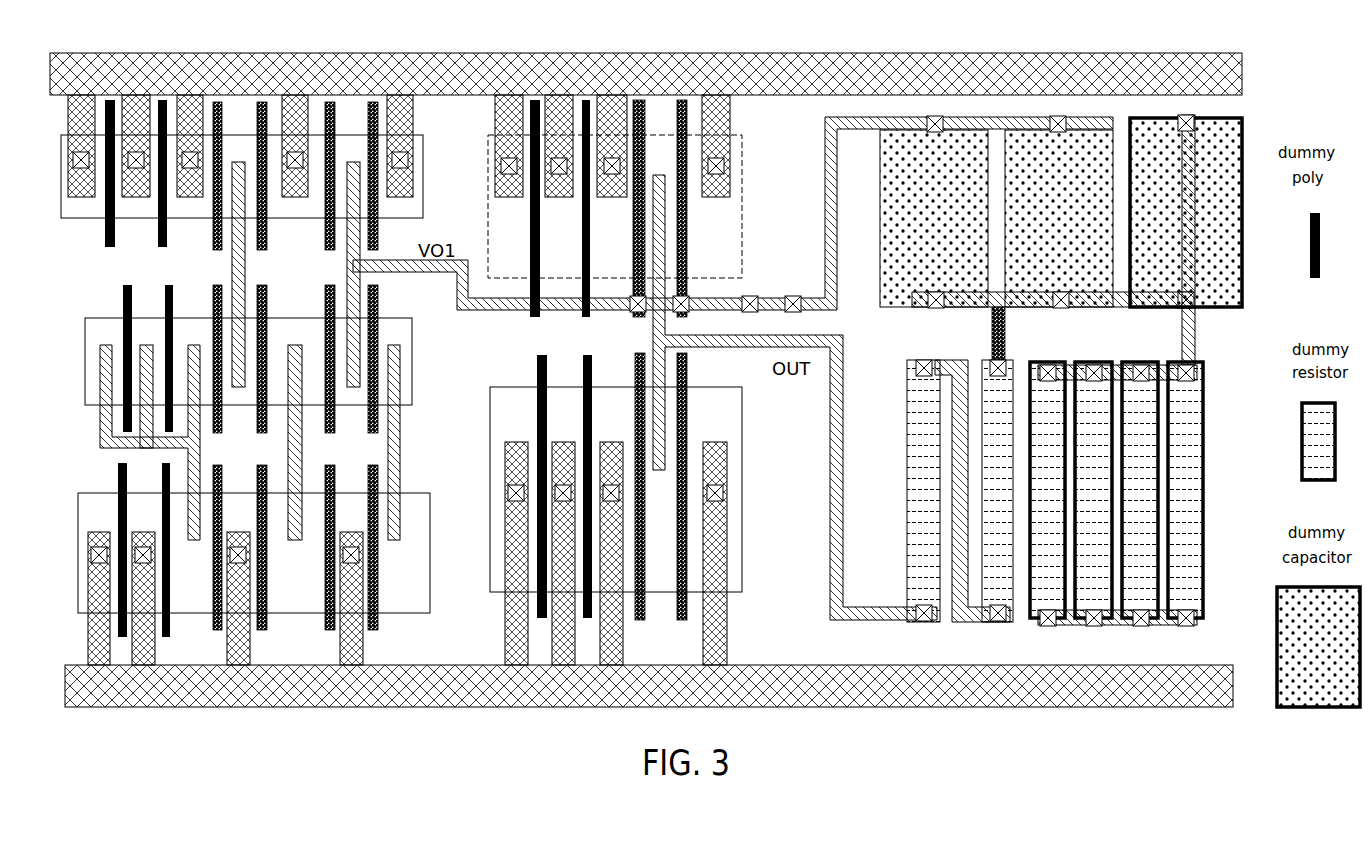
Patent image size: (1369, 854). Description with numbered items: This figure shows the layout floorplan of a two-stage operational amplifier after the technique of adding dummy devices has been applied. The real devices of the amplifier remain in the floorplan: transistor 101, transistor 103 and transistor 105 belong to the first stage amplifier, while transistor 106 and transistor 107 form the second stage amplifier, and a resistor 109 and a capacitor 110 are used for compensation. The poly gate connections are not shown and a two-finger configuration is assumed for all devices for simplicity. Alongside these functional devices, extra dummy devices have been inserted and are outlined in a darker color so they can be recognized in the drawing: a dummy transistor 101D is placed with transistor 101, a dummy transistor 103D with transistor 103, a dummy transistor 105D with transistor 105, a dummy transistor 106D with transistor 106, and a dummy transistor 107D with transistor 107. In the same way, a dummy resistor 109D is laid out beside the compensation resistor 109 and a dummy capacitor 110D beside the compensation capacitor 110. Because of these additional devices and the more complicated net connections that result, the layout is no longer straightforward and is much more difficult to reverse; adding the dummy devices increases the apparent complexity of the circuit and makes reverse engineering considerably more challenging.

The transistor 101 is at (248, 410).
The dummy transistor 101D is at (125, 356).
The transistor 103 is at (242, 241).
The dummy transistor 103D is at (112, 176).
The transistor 105 is at (254, 557).
The dummy transistor 105D is at (120, 550).
The transistor 106 is at (615, 206).
The dummy transistor 106D is at (560, 208).
The transistor 107 is at (616, 509).
The dummy transistor 107D is at (564, 477).
The resistor 109 is at (960, 477).
The dummy resistor 109D is at (1215, 373).
The capacitor 110 is at (1090, 138).
The dummy capacitor 110D is at (1247, 140).